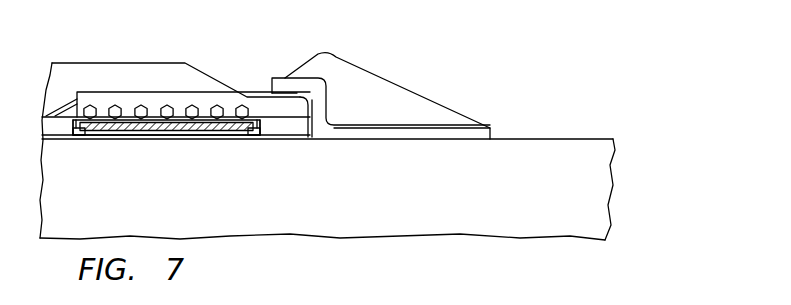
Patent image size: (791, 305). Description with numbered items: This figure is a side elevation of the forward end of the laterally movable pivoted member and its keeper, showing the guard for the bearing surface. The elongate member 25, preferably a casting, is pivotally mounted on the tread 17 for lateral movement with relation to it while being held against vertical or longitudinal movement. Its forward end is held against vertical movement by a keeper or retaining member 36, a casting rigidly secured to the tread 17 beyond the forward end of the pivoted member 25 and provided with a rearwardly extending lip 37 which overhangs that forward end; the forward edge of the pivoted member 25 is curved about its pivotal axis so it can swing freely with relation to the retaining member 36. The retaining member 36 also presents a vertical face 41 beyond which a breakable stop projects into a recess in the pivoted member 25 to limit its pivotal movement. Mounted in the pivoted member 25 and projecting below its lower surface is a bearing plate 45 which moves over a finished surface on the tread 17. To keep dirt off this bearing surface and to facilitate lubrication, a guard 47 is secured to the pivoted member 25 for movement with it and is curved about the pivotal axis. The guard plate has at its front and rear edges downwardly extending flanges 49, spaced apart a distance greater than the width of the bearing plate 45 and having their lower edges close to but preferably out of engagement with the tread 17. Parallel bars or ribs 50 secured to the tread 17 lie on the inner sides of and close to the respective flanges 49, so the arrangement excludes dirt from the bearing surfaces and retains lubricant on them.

The tread 17 is at (590, 193).
The elongate member 25 is at (145, 73).
The keeper or retaining member 36 is at (410, 110).
The rearwardly extending portion or lip 37 is at (278, 80).
The vertical face 41 is at (296, 95).
The bearing plate 45 is at (162, 137).
The guard 47 is at (193, 136).
The downwardly extending flange 49 is at (73, 133).
The parallel bars or ribs 50 is at (80, 135).